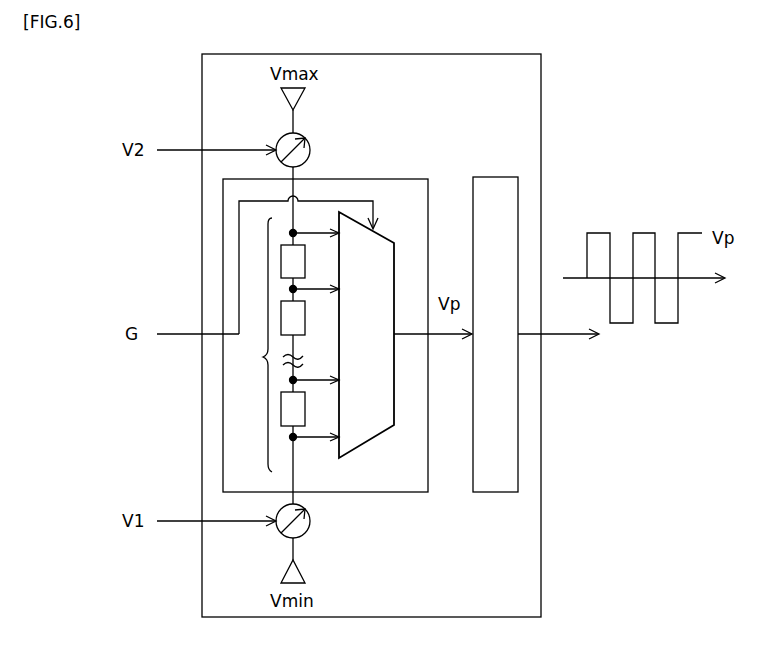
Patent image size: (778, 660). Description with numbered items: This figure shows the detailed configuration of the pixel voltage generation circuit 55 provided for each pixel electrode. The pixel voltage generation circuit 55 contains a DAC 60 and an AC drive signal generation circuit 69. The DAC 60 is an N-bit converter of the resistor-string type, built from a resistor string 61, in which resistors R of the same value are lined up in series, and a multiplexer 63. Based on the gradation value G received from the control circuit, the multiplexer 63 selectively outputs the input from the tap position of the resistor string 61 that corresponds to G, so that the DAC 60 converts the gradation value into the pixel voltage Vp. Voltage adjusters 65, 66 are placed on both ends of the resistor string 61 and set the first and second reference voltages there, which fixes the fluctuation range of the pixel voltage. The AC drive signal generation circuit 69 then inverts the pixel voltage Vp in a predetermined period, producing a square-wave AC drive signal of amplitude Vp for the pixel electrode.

The pixel voltage generation circuit 55 is at (541, 90).
The DAC 60 is at (392, 179).
The resistor string 61 is at (268, 345).
The multiplexer 63 is at (370, 440).
The voltage adjuster 65 is at (308, 530).
The voltage adjuster 66 is at (310, 142).
The AC drive signal generation circuit 69 is at (496, 177).